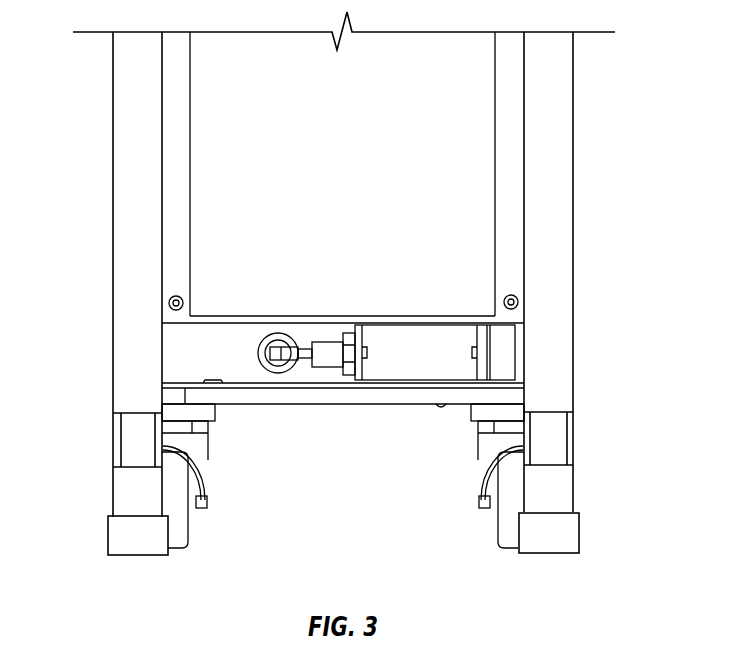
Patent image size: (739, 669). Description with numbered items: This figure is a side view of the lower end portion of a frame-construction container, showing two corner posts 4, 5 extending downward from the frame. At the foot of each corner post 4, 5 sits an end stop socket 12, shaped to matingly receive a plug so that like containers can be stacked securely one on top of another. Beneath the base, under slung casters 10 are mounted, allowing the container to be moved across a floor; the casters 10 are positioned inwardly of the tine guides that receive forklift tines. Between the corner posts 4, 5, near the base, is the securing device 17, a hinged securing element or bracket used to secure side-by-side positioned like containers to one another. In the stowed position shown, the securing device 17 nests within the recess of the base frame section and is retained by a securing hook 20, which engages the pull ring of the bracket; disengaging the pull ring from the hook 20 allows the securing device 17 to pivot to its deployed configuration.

The corner post 4 is at (558, 190).
The corner post 5 is at (127, 193).
The caster 10 is at (180, 537).
The end stop socket 12 is at (118, 538).
The securing device 17 is at (412, 337).
The securing hook 20 is at (282, 344).